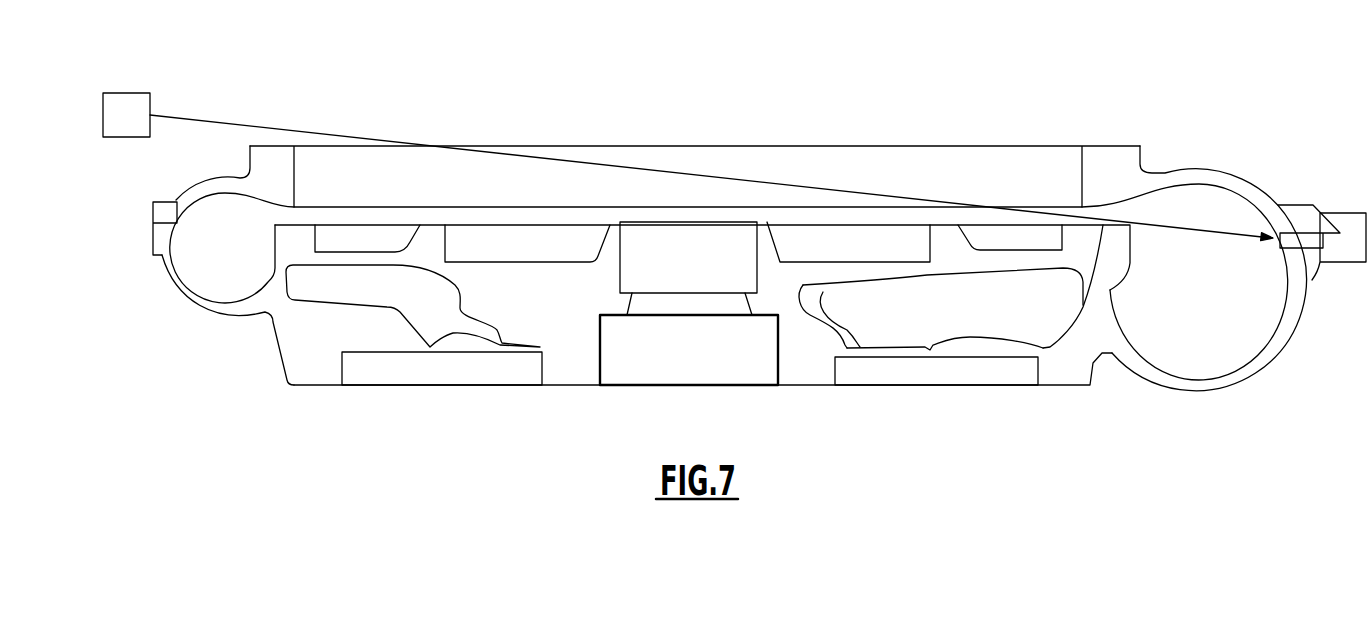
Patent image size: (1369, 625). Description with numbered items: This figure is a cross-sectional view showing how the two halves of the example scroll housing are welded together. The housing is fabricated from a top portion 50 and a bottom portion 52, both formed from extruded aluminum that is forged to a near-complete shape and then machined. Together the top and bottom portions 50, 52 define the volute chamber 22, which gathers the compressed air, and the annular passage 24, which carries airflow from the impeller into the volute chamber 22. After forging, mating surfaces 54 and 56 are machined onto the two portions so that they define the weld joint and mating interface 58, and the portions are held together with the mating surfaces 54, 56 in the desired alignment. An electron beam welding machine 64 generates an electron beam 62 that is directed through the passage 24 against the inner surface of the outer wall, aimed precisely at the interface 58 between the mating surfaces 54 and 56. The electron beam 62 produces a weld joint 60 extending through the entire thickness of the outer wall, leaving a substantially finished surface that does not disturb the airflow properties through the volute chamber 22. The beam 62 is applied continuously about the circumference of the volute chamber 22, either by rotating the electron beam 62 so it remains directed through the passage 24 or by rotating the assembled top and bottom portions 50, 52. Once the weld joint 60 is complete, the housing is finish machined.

The volute chamber 22 is at (1197, 325).
The passage 24 is at (297, 215).
The top portion 50 is at (908, 146).
The bottom portion 52 is at (893, 386).
The mating surface 54 is at (168, 221).
The mating surface 56 is at (160, 229).
The interface 58 is at (181, 227).
The weld joint 60 is at (1277, 247).
The electron beam 62 is at (957, 203).
The electron beam welding machine 64 is at (151, 104).